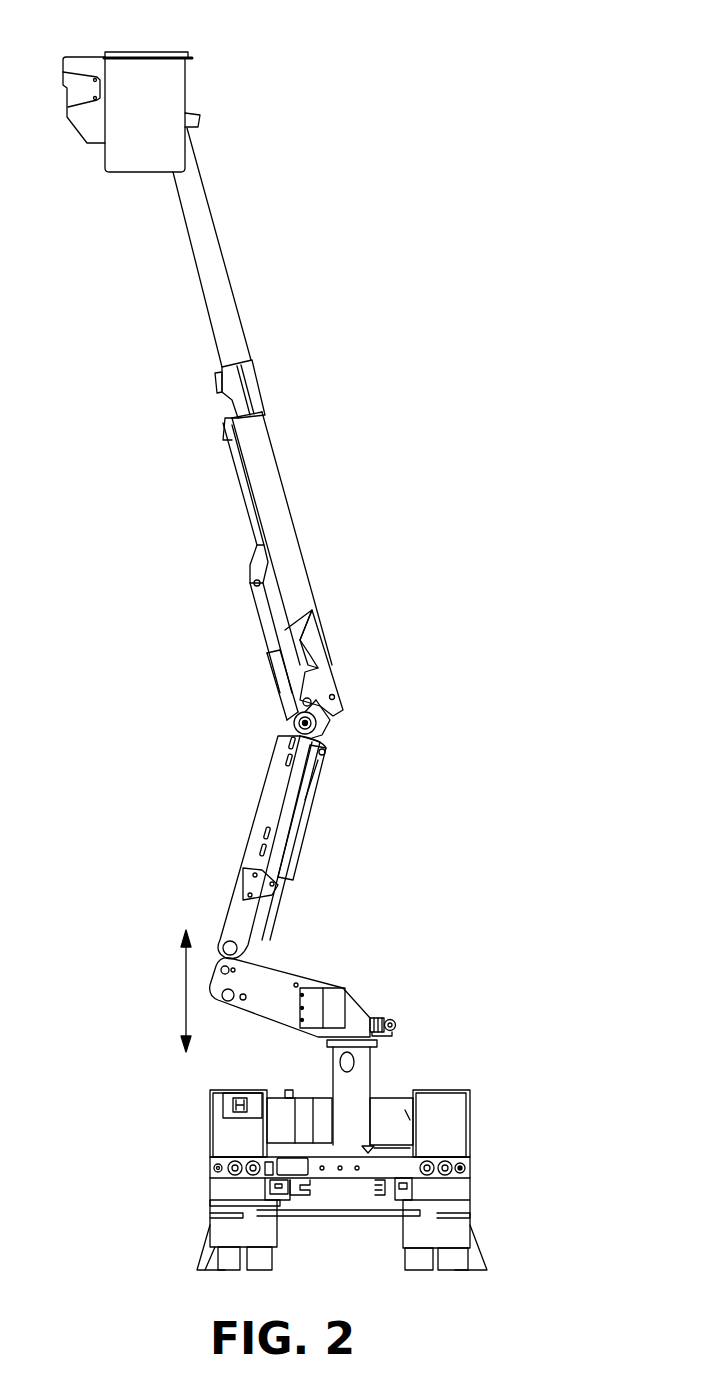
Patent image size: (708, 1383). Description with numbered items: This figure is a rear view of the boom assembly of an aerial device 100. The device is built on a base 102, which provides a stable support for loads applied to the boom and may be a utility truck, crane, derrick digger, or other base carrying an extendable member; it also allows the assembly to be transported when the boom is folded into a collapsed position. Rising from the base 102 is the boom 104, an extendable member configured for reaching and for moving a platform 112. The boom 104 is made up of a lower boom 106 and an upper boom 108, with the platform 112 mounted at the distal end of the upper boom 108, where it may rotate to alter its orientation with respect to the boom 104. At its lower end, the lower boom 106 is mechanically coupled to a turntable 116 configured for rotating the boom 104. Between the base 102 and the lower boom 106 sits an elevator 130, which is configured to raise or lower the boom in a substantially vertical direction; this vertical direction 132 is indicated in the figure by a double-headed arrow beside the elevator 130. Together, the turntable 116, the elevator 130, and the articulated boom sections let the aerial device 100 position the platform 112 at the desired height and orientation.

The aerial device 100 is at (548, 49).
The base 102 is at (198, 1197).
The boom 104 is at (348, 649).
The lower boom 106 is at (268, 790).
The upper boom 108 is at (262, 402).
The platform 112 is at (76, 30).
The turntable 116 is at (398, 1027).
The elevator 130 is at (305, 975).
The direction 132 is at (182, 990).